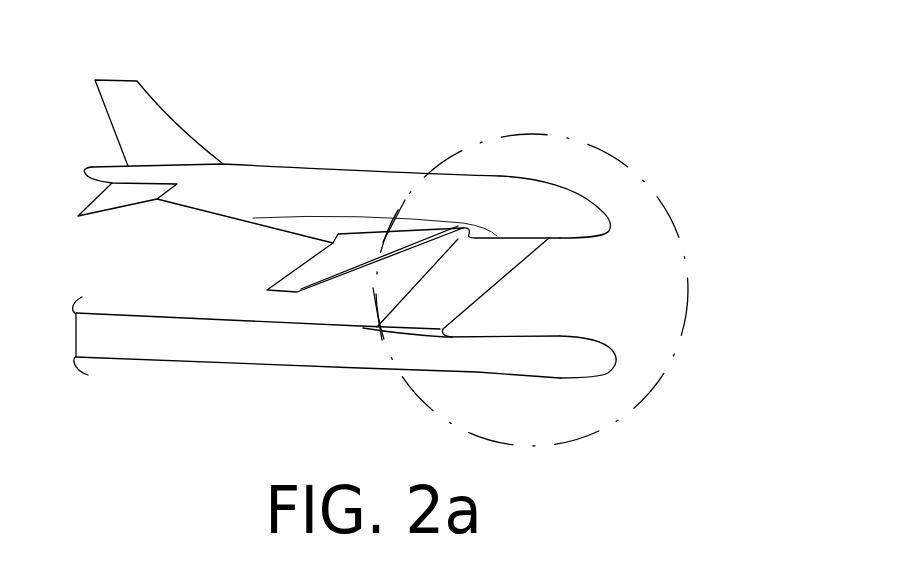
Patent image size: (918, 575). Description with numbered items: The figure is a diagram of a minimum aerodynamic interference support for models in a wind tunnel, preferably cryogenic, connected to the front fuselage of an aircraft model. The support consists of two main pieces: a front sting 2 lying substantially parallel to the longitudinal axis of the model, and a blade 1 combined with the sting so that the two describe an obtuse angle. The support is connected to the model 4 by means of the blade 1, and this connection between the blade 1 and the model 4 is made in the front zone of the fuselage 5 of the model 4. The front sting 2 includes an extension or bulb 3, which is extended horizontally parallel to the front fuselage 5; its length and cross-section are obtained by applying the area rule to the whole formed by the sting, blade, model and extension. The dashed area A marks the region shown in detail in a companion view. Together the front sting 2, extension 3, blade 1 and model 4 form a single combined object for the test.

The blade 1 is at (483, 265).
The front sting 2 is at (213, 340).
The extension of the front sting 3 is at (513, 355).
The model 4 is at (337, 187).
The front fuselage of the model 5 is at (570, 217).
The dashed area A is at (647, 395).